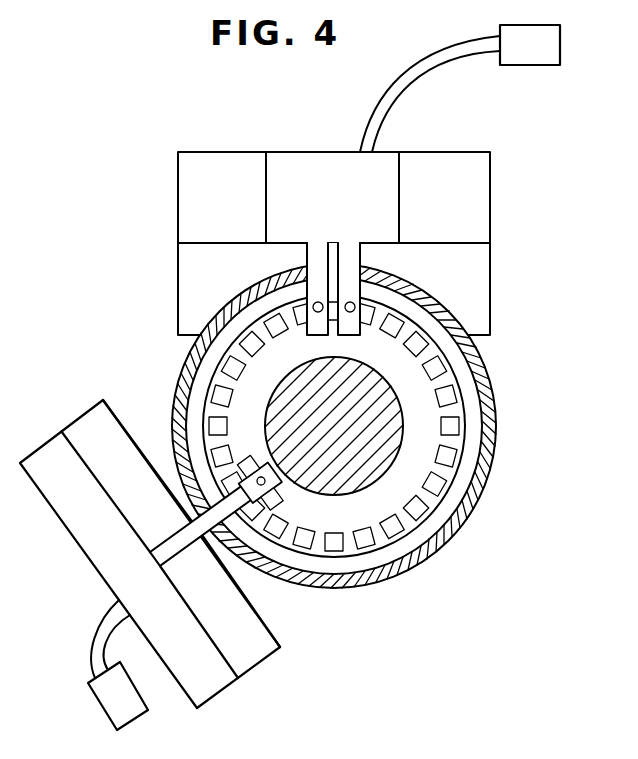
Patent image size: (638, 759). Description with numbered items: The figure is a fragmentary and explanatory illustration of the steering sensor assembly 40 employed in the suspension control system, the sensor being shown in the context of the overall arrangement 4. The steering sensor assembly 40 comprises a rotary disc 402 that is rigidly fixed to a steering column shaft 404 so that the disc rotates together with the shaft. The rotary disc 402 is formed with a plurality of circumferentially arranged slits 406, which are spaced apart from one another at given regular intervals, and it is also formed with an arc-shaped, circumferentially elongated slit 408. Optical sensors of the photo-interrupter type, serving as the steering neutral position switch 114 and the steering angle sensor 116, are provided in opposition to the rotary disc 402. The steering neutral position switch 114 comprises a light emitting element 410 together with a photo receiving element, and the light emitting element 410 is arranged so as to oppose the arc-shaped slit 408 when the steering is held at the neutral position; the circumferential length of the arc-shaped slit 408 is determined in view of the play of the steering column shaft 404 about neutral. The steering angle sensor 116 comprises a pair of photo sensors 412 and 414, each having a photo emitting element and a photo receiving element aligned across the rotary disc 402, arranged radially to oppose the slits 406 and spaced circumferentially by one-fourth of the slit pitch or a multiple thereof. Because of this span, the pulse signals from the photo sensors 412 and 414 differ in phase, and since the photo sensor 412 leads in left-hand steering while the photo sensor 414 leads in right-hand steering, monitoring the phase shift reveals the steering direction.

The detector unit 4 is at (93, 555).
The steering sensor assembly 40 is at (501, 368).
The steering neutral position switch 114 is at (110, 598).
The steering angle sensor 116 is at (495, 351).
The rotary disc 402 is at (458, 445).
The steering column shaft 404 is at (390, 470).
The slits 406 is at (459, 424).
The arc-shaped slit 408 is at (247, 460).
The light emitting element 410 is at (262, 486).
The photo sensor 412 is at (318, 312).
The photo sensor 414 is at (350, 312).